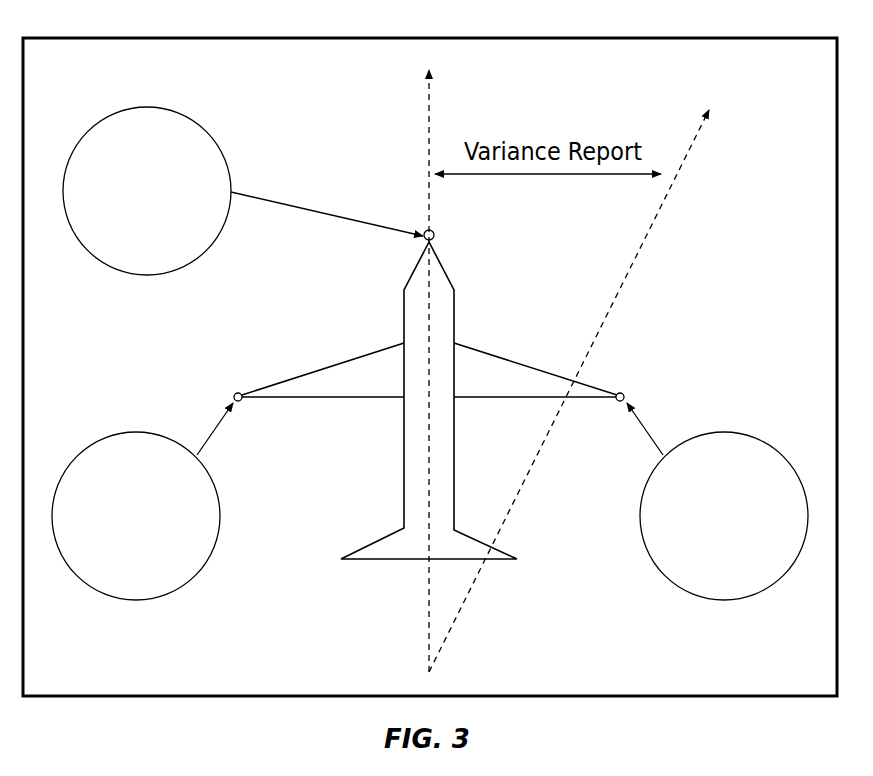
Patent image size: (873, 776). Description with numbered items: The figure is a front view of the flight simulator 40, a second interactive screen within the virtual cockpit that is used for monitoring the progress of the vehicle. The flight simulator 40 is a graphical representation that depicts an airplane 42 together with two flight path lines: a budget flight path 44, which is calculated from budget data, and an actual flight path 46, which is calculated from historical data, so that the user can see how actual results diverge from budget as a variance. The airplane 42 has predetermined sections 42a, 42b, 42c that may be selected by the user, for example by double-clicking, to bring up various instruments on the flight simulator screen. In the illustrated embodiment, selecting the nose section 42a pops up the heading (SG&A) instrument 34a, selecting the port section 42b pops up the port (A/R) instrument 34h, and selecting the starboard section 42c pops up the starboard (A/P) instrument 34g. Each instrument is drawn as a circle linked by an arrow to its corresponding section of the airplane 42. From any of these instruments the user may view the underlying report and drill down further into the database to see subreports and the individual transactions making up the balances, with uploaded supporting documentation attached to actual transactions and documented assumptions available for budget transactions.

The flight simulator 40 is at (68, 38).
The heading (SG&A) instrument 34a is at (147, 108).
The port (A/R) instrument 34h is at (136, 432).
The starboard (A/P) instrument 34g is at (724, 432).
The airplane 42 is at (455, 310).
The nose section of airplane 42a is at (436, 235).
The port section of airplane 42b is at (236, 393).
The starboard section of airplane 42c is at (622, 393).
The budget flight path 44 is at (428, 134).
The actual flight path 46 is at (645, 237).